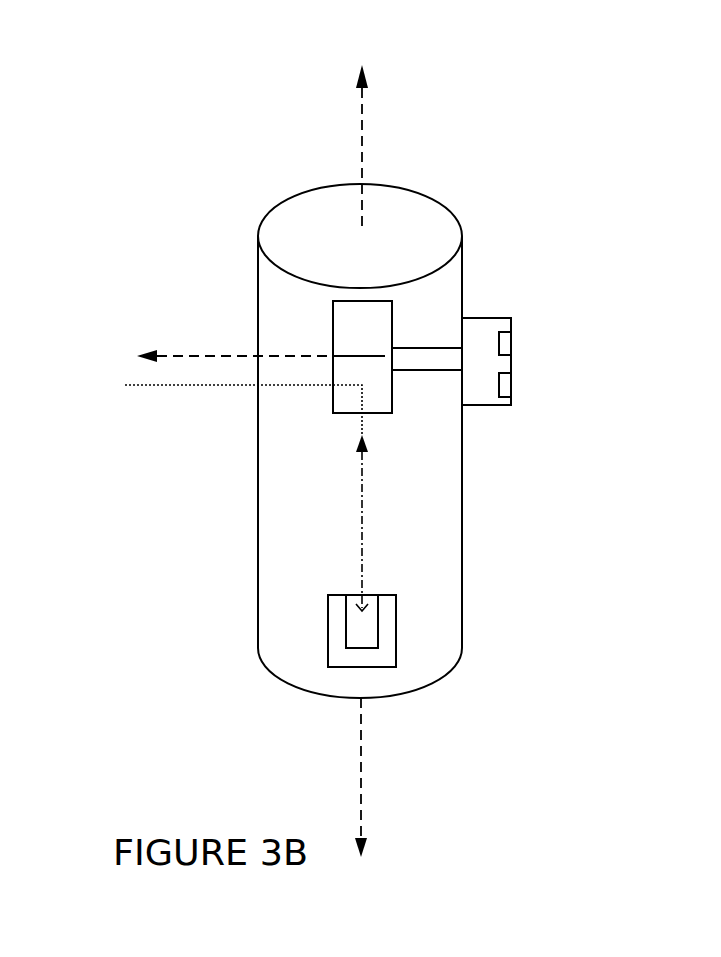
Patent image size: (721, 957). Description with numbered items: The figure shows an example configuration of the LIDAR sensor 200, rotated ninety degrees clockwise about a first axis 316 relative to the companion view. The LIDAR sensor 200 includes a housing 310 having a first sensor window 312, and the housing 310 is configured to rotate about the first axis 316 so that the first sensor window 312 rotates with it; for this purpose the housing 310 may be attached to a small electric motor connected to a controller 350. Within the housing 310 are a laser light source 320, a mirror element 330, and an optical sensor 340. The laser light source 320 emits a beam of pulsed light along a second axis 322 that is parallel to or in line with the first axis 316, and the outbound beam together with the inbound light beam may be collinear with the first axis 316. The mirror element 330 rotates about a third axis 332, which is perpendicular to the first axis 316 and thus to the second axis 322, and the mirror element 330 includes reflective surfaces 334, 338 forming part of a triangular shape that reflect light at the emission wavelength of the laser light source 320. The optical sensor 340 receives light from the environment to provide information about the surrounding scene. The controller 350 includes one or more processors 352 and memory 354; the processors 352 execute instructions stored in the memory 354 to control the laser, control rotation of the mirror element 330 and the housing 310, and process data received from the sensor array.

The LIDAR sensor 200 is at (270, 146).
The housing 310 is at (463, 276).
The first sensor window 312 is at (283, 500).
The first axis 316 is at (362, 463).
The laser light source 320 is at (395, 628).
The second axis 322 is at (362, 542).
The mirror element 330 is at (332, 322).
The third axis 332 is at (238, 356).
The reflective surface 334 is at (392, 393).
The reflective surface 338 is at (395, 328).
The optical sensor 340 is at (345, 643).
The controller 350 is at (513, 362).
The processors 352 is at (513, 345).
The memory 354 is at (513, 387).